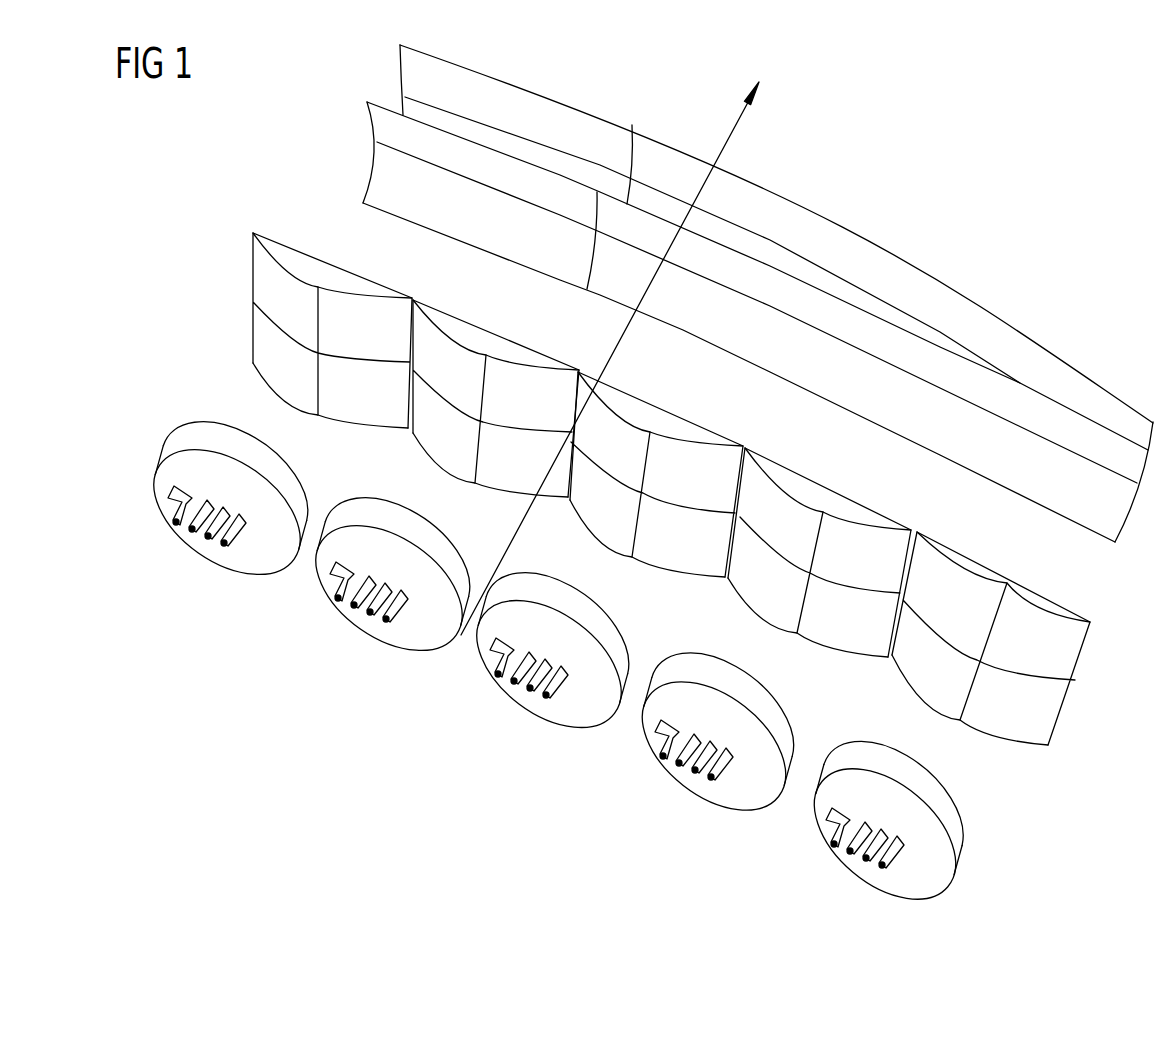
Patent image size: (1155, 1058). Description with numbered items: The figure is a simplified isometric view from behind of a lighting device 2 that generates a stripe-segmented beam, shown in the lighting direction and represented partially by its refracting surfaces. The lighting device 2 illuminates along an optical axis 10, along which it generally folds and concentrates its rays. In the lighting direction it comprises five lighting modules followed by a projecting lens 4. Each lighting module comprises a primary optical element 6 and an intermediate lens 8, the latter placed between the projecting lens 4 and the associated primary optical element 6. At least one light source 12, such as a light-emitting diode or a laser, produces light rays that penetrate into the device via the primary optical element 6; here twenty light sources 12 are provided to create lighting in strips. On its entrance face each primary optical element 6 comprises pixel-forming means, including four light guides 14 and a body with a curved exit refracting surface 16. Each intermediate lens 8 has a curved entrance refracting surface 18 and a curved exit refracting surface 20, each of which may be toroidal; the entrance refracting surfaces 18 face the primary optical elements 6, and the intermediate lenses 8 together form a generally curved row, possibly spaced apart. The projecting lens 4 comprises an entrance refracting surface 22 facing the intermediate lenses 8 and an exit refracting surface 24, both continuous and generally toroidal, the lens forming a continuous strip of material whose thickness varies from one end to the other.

The lighting device 2 is at (990, 127).
The projecting lens 4 is at (328, 110).
The primary optical element 6 is at (565, 687).
The intermediate lens 8 is at (222, 316).
The optical axis 10 is at (742, 125).
The light source 12 is at (546, 726).
The light guide 14 is at (170, 500).
The curved exit refracting surface 16 is at (287, 478).
The curved entrance refracting surface 18 is at (272, 296).
The curved exit refracting surface 20 is at (347, 292).
The entrance refracting surface 22 is at (477, 229).
The exit refracting surface 24 is at (915, 263).